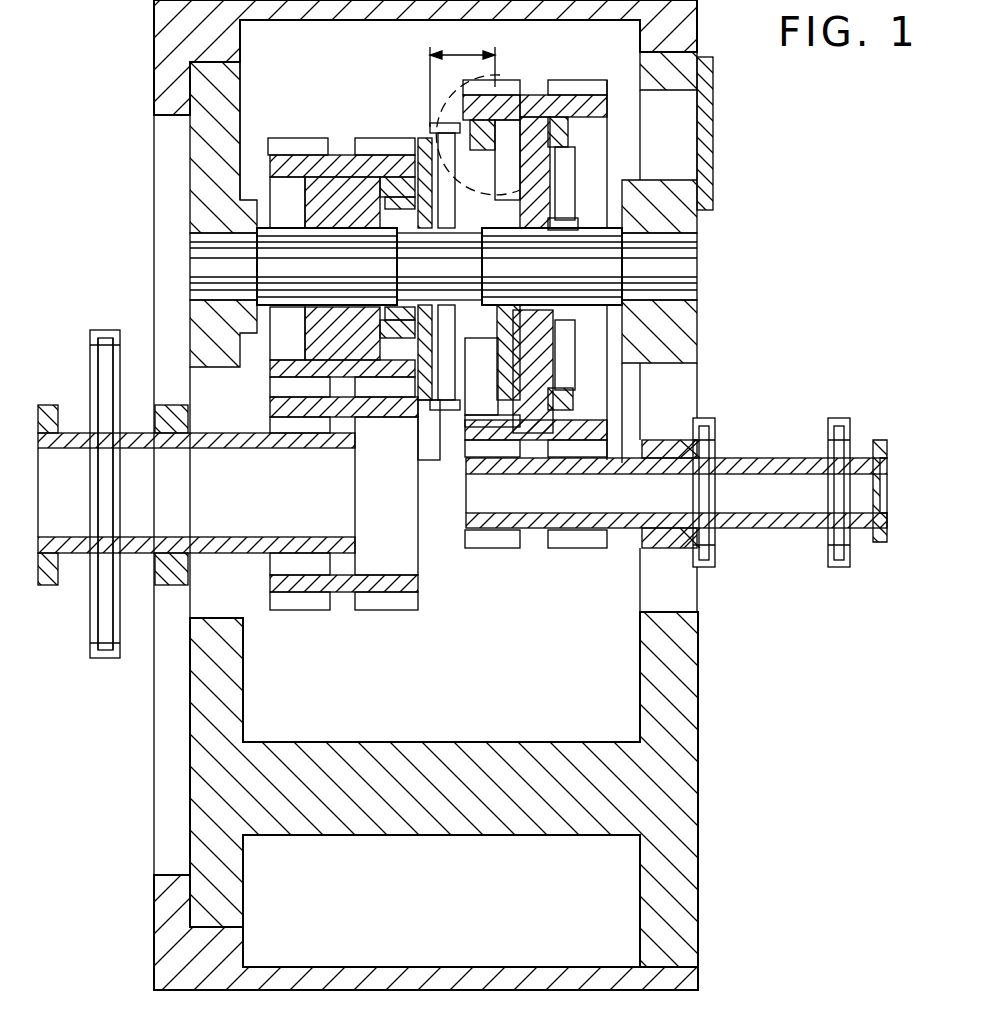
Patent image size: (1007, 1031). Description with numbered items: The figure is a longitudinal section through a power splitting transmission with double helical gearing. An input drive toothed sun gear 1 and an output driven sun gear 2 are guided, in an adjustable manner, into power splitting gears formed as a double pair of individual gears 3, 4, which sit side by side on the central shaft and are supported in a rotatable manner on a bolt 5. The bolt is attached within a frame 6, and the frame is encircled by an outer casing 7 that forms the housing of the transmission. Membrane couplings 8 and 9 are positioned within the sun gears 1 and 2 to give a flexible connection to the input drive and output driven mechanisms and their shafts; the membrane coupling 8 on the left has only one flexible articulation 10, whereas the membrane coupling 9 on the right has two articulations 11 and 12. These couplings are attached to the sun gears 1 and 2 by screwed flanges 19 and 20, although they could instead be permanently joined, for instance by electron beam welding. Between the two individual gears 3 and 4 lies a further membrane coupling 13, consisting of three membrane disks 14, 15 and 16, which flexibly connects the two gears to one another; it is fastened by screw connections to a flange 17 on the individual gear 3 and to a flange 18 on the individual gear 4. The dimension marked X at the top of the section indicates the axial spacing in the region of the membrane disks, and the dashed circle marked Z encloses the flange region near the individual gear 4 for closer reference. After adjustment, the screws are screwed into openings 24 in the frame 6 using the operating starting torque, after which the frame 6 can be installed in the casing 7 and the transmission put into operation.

The sun gear 1 is at (336, 585).
The sun gear 2 is at (525, 525).
The individual gear 3 is at (342, 165).
The individual gear 4 is at (538, 172).
The bolt 5 is at (580, 282).
The frame 6 is at (672, 716).
The casing 7 is at (688, 18).
The membrane coupling 8 is at (70, 385).
The membrane coupling 9 is at (770, 432).
The flexible articulation 10 is at (105, 658).
The articulation 11 is at (708, 570).
The articulation 12 is at (843, 570).
The membrane coupling 13 is at (452, 428).
The membrane disk 14 is at (420, 142).
The membrane disk 15 is at (452, 135).
The membrane disk 16 is at (494, 362).
The flange 17 is at (386, 162).
The flange 18 is at (512, 108).
The screwed flange 19 is at (172, 590).
The screwed flange 20 is at (660, 550).
The opening 24 is at (680, 108).
The shift distance X is at (462, 77).
The detail circle Z is at (592, 118).